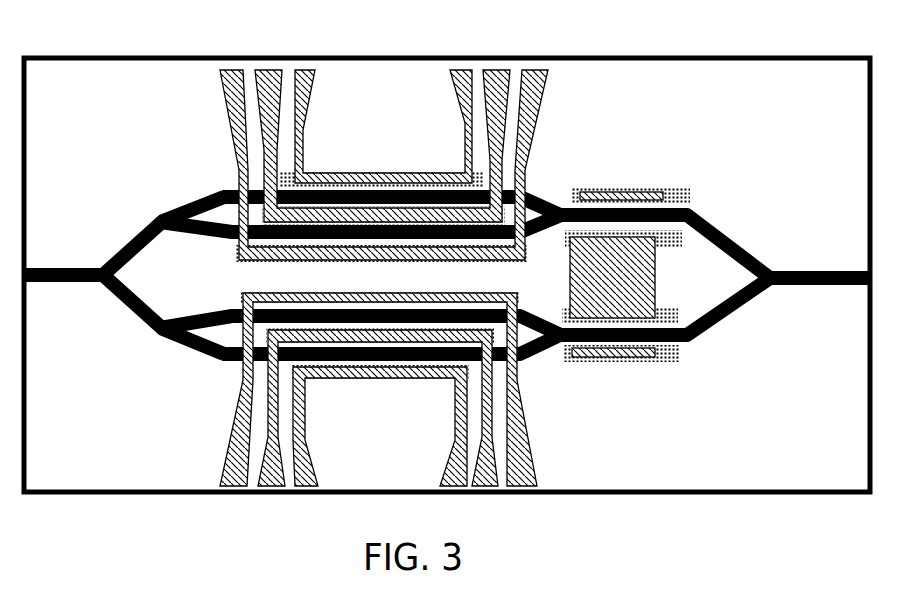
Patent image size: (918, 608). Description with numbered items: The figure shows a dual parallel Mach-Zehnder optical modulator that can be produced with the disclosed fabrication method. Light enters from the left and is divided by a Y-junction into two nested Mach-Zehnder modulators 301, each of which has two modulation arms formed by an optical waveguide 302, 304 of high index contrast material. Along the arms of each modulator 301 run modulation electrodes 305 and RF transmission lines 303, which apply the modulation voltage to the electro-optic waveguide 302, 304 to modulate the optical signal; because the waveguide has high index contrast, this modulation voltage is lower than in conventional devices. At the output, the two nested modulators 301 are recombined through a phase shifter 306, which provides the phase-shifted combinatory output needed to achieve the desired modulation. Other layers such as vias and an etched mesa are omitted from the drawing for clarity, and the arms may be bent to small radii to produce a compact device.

The nested Mach-Zehnder modulator 301 is at (227, 333).
The optical waveguide 302 is at (243, 190).
The RF transmission lines 303 is at (220, 93).
The optical waveguide 304 is at (413, 192).
The modulation electrodes 305 is at (383, 380).
The phase shifter 306 is at (643, 317).